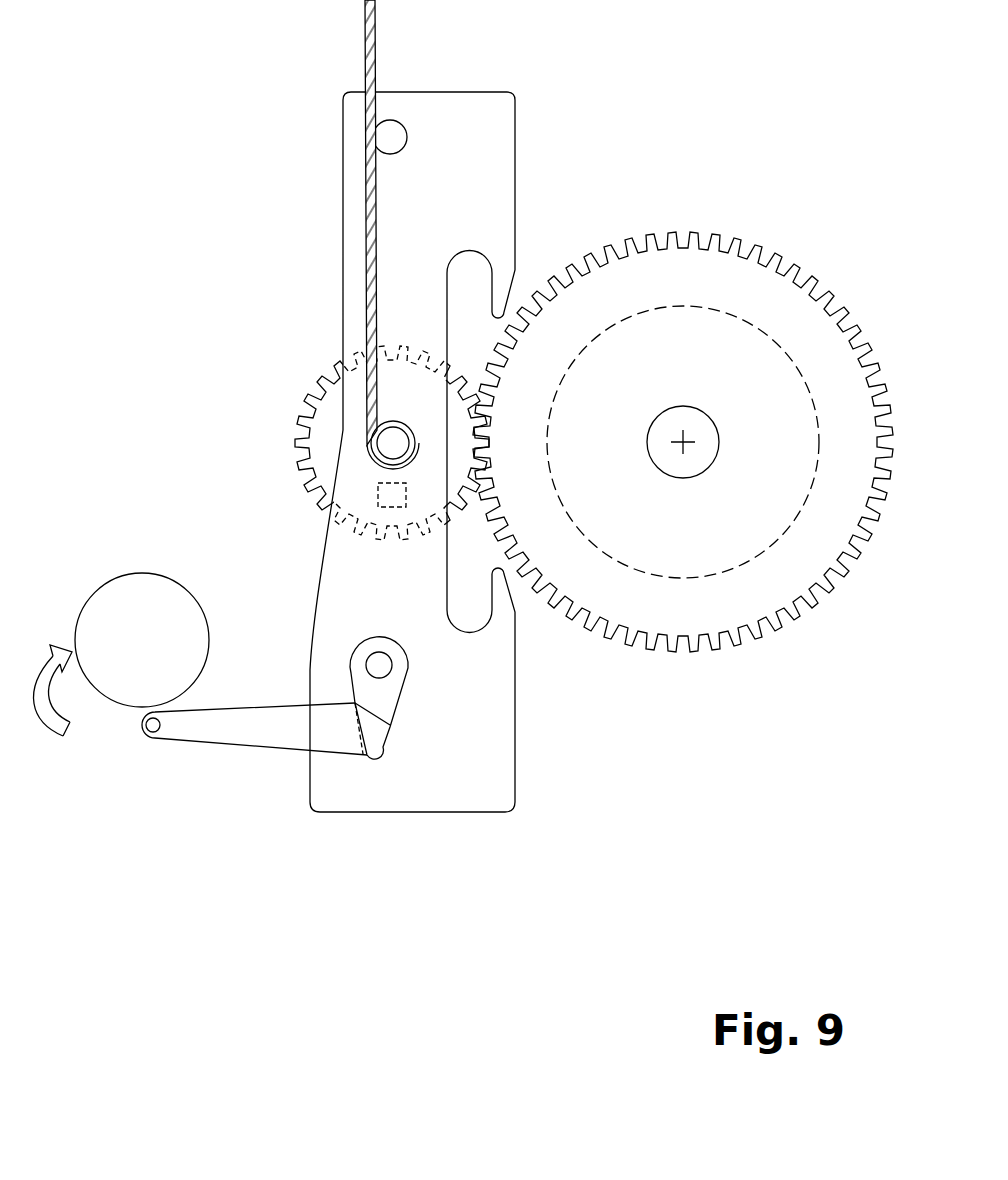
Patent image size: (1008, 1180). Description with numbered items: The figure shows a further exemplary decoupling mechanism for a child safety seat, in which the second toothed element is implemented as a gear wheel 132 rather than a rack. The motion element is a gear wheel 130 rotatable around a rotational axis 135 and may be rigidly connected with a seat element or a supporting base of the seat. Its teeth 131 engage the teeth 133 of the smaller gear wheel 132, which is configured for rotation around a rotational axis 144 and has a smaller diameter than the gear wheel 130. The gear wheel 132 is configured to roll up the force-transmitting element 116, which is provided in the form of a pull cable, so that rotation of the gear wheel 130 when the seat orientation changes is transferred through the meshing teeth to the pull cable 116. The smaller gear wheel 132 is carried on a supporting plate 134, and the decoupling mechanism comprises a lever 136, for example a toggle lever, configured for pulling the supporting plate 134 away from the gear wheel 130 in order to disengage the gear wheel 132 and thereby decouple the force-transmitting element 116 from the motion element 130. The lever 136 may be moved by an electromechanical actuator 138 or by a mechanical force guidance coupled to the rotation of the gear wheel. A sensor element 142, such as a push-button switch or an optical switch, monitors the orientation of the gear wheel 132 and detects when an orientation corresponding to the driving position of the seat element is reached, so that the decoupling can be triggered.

The force-transmitting element 116 is at (366, 15).
The motion element 130 is at (683, 437).
The teeth 131 is at (828, 290).
The gear wheel 132 is at (353, 434).
The teeth 133 is at (326, 382).
The supporting plate 134 is at (504, 152).
The rotational axis 135 is at (703, 438).
The lever 136 is at (238, 737).
The electromechanical actuator 138 is at (140, 585).
The sensor element 142 is at (383, 506).
The rotational axis 144 is at (387, 444).